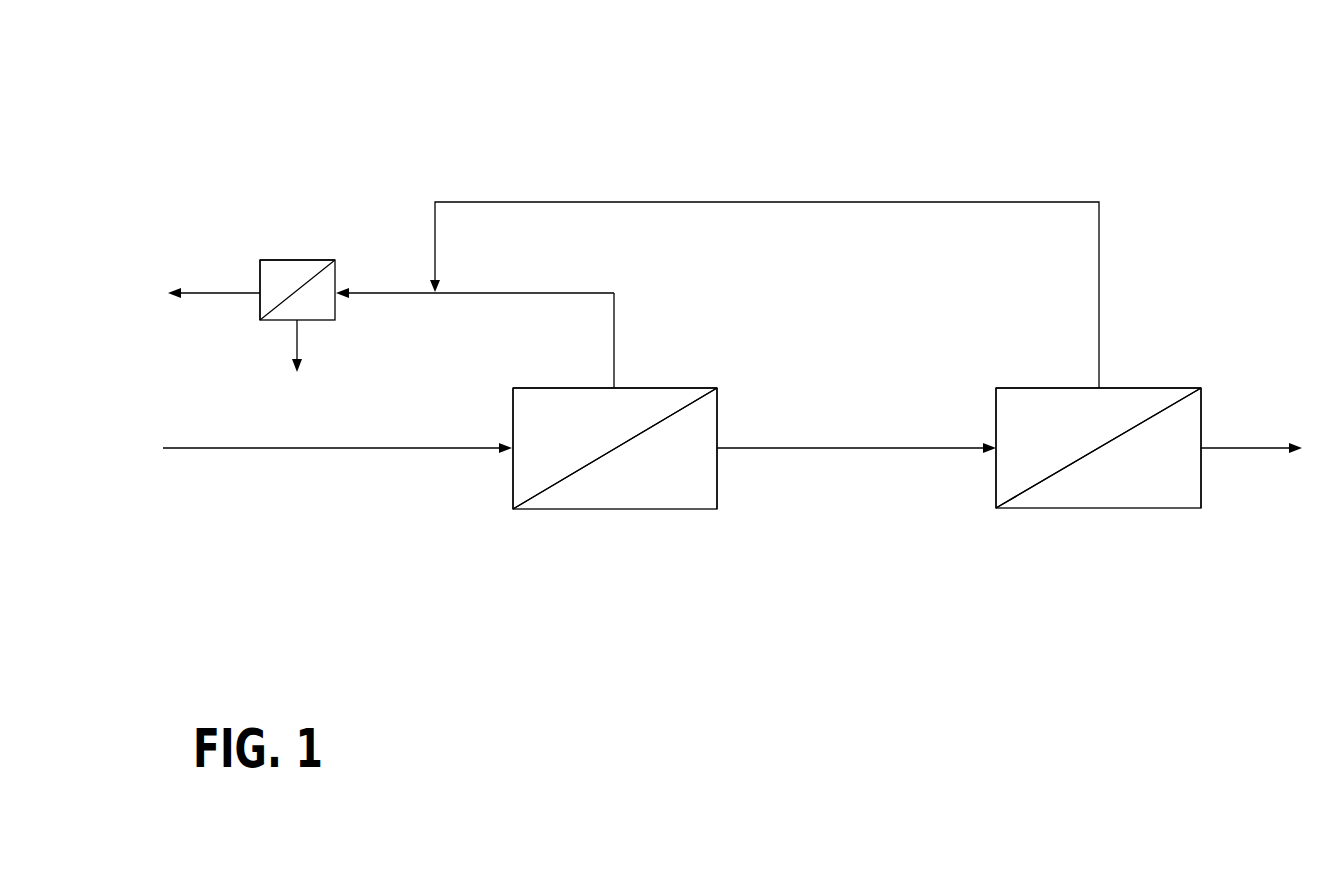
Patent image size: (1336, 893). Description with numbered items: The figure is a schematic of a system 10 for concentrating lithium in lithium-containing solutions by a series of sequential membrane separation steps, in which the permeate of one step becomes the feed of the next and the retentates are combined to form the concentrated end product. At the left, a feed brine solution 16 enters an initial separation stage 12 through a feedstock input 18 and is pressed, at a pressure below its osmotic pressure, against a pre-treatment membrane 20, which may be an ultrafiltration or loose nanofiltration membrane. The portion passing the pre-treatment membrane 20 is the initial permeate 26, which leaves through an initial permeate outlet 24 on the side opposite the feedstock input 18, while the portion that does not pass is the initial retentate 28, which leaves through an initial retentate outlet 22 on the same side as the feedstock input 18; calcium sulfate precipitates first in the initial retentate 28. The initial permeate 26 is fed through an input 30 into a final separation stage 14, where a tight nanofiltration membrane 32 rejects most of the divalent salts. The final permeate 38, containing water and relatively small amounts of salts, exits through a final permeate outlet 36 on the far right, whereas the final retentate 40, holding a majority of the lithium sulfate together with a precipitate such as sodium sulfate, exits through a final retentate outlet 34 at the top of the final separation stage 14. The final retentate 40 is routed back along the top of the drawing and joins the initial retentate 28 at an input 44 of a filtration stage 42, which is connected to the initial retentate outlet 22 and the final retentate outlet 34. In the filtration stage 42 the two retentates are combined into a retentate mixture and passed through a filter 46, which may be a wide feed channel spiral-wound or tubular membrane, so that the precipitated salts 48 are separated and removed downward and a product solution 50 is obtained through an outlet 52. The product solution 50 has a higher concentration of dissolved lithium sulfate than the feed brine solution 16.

The system 10 is at (644, 102).
The initial separation stage 12 is at (600, 516).
The final separation stage 14 is at (1095, 516).
The feed brine solution 16 is at (366, 450).
The feedstock input 18 is at (512, 457).
The pre-treatment membrane 20 is at (617, 448).
The initial retentate outlet 22 is at (617, 386).
The initial permeate outlet 24 is at (718, 450).
The initial permeate 26 is at (845, 450).
The initial retentate 28 is at (614, 330).
The input 30 is at (996, 449).
The nanofiltration membrane 32 is at (1105, 447).
The final retentate outlet 34 is at (1100, 385).
The final permeate outlet 36 is at (1203, 442).
The final permeate 38 is at (1247, 451).
The final retentate 40 is at (1100, 285).
The filtration stage 42 is at (296, 248).
The input 44 is at (338, 288).
The filter 46 is at (299, 293).
The precipitated salts 48 is at (297, 335).
The product solution 50 is at (213, 290).
The outlet 52 is at (260, 298).